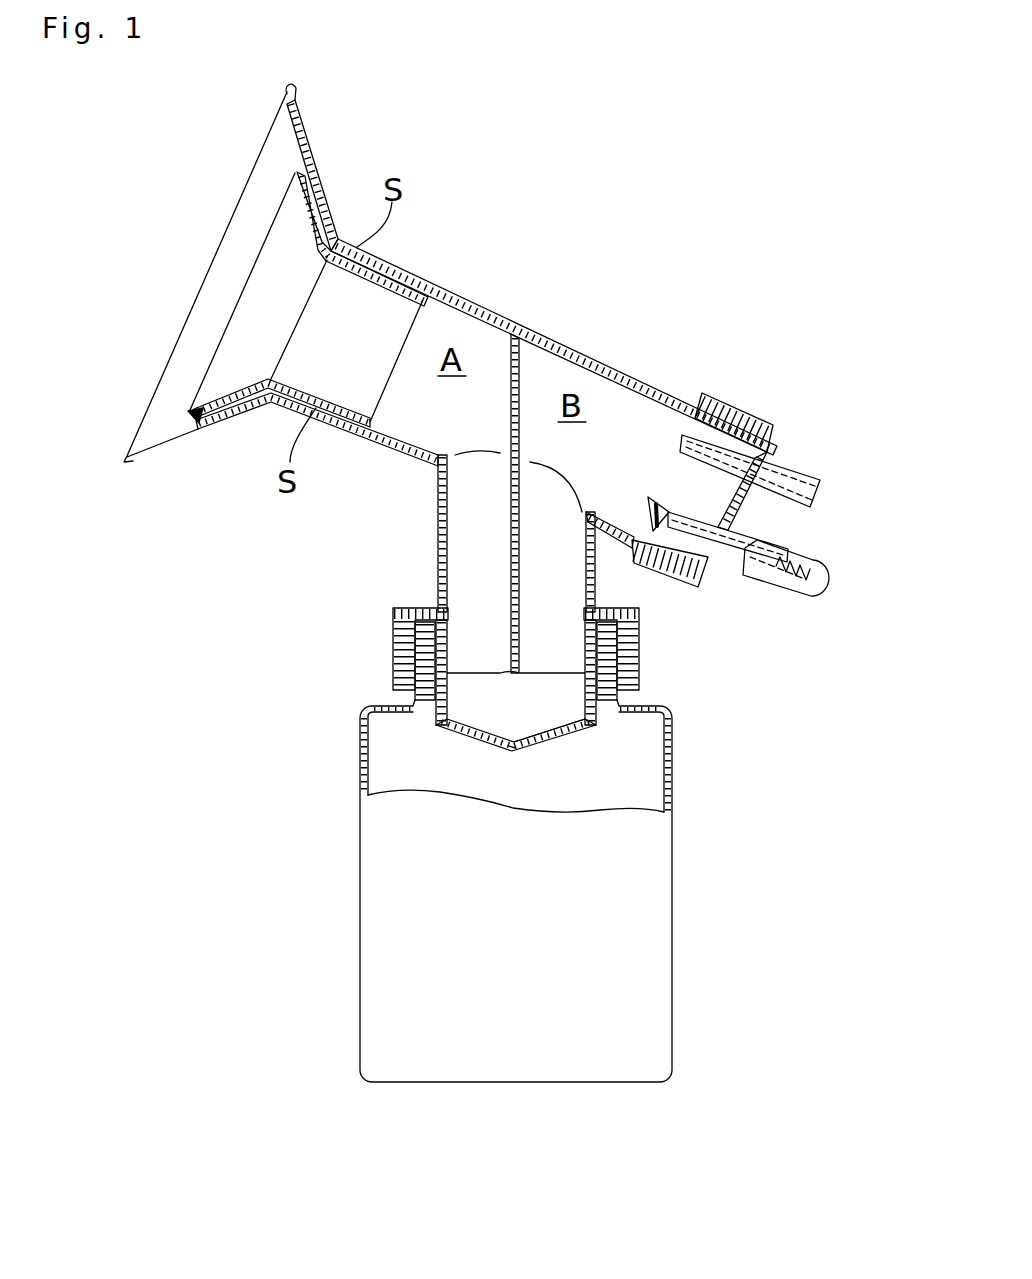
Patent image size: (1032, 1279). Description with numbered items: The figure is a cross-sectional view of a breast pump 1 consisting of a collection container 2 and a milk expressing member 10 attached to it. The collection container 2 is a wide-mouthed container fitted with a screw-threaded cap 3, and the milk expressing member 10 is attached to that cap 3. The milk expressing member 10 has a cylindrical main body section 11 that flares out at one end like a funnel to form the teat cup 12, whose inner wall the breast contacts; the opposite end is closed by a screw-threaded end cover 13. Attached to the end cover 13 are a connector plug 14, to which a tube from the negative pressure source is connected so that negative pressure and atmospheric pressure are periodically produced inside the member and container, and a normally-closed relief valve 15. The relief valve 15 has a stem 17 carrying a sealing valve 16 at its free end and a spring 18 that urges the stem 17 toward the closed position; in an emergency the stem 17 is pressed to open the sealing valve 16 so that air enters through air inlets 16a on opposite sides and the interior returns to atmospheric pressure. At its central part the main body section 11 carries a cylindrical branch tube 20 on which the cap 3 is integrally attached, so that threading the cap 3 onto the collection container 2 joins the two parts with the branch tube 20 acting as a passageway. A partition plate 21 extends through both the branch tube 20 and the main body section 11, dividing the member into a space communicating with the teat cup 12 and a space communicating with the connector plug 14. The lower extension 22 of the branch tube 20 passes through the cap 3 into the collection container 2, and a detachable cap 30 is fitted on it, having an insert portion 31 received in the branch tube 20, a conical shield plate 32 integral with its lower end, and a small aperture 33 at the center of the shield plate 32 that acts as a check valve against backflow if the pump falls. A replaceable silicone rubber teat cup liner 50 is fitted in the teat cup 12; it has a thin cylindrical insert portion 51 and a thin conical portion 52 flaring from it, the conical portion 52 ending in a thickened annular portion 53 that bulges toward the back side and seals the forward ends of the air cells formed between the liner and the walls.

The breast pump 1 is at (160, 718).
The collection container 2 is at (655, 975).
The cap 3 is at (393, 648).
The milk expressing member 10 is at (660, 250).
The main body section 11 is at (488, 318).
The teat cup 12 is at (292, 123).
The end cover 13 is at (738, 403).
The connector plug 14 is at (797, 458).
The relief valve 15 is at (805, 547).
The sealing valve 16 is at (650, 505).
The air inlets 16a is at (708, 588).
The stem 17 is at (666, 514).
The spring 18 is at (795, 602).
The branch tube 20 is at (438, 550).
The partition plate 21 is at (508, 418).
The extension 22 is at (446, 650).
The cap 30 is at (514, 766).
The insert portion 31 is at (585, 690).
The shield plate 32 is at (574, 737).
The small aperture 33 is at (514, 750).
The teat cup liner 50 is at (289, 344).
The insert portion 51 is at (333, 404).
The conical portion 52 is at (246, 389).
The thickened annular portion 53 is at (199, 426).